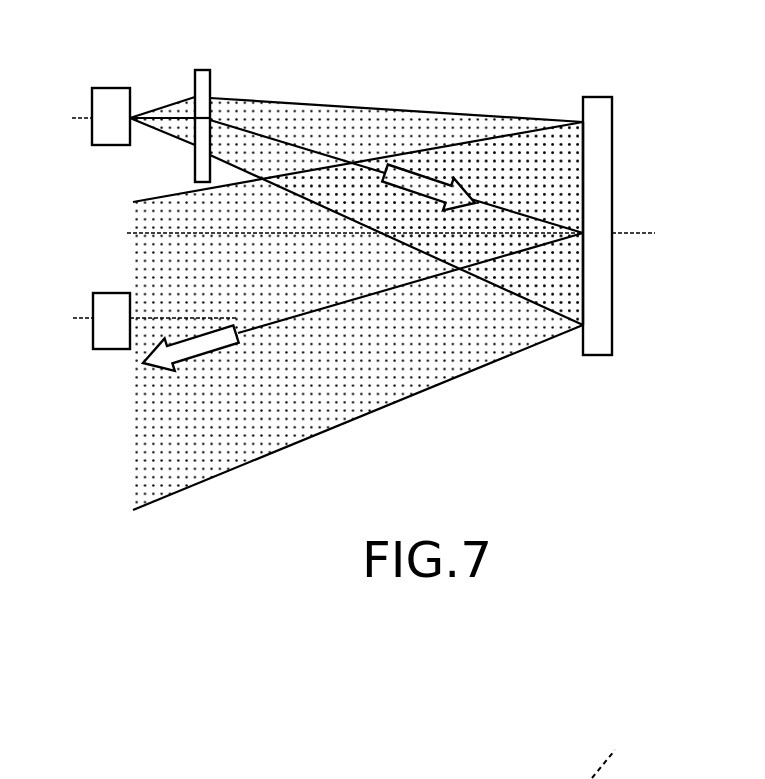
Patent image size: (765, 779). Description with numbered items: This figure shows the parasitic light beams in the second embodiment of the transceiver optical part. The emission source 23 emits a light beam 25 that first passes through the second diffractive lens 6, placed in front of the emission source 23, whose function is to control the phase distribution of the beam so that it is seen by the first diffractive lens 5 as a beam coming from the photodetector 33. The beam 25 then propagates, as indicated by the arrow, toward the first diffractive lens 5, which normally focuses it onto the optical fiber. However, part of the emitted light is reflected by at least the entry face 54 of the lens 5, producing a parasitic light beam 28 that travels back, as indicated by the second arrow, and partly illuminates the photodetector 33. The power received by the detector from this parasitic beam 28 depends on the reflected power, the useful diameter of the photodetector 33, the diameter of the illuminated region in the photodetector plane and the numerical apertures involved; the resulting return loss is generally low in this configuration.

The first diffractive lens 5 is at (598, 97).
The second diffractive lens 6 is at (203, 70).
The emission source 23 is at (110, 107).
The beam coming from the emitter 25 is at (378, 124).
The parasitic light beam 28 is at (308, 410).
The photodetector 33 is at (110, 335).
The entry face of the lens 54 is at (583, 353).